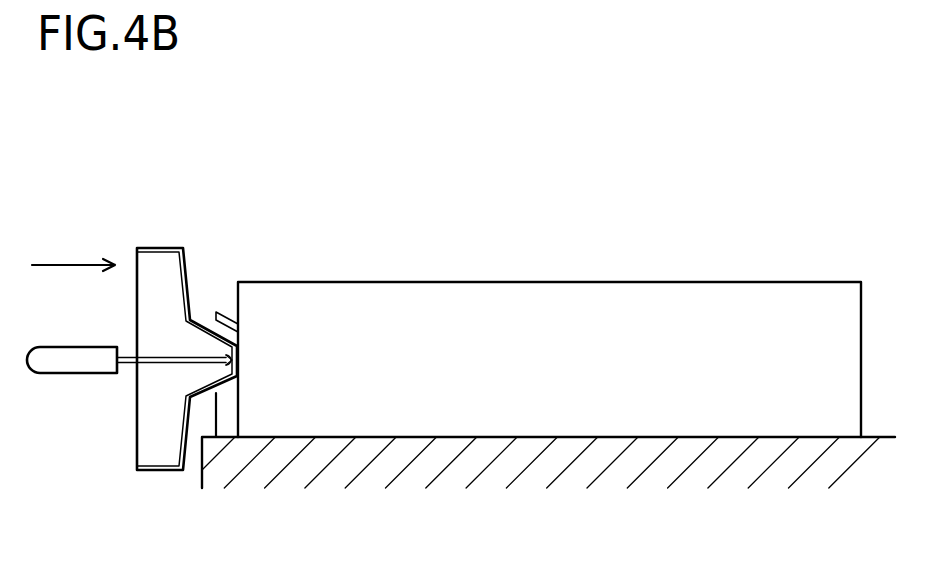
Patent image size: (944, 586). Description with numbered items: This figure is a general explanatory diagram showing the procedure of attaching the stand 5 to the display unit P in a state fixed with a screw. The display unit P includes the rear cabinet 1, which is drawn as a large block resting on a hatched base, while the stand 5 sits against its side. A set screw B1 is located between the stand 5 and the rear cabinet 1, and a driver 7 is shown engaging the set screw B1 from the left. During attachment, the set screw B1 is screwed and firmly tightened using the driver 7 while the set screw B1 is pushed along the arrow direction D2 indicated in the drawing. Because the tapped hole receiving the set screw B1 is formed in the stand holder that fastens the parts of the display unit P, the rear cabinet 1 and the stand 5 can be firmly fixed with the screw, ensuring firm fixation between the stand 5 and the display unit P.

The rear cabinet 1 is at (538, 281).
The stand 5 is at (152, 472).
The driver 7 is at (70, 375).
The set screw B1 is at (208, 328).
The arrow direction D2 is at (70, 262).
The display unit P is at (828, 254).